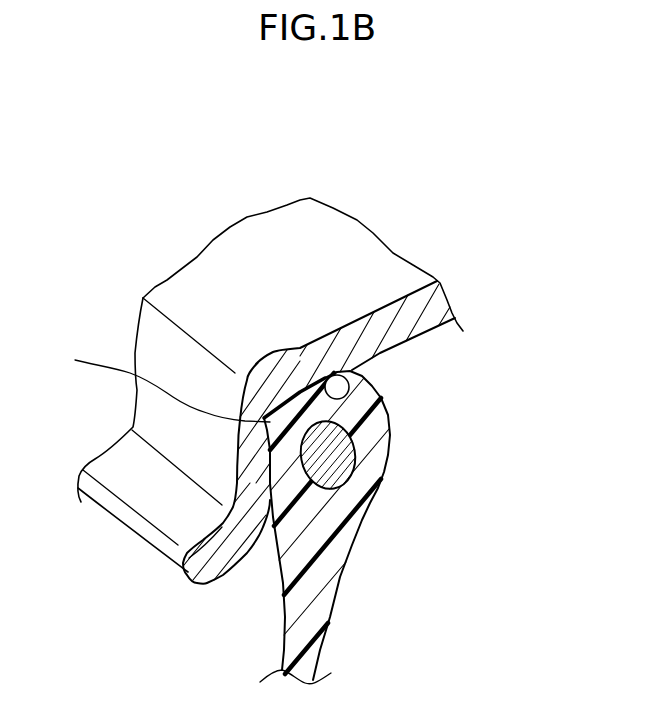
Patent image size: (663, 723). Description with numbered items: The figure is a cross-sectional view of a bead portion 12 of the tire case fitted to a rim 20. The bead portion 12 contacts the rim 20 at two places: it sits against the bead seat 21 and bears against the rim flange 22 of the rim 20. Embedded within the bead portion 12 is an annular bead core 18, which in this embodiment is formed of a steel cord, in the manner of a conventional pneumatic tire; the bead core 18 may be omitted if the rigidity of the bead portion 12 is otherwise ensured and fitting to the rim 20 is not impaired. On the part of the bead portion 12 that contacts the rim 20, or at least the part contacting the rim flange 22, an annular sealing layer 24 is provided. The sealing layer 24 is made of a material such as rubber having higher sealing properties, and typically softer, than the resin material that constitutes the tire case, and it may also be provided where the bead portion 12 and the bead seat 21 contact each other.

The bead portion 12 is at (380, 480).
The bead core 18 is at (354, 457).
The rim 20 is at (293, 186).
The bead seat 21 is at (345, 372).
The rim flange 22 is at (100, 457).
The sealing layer 24 is at (151, 384).